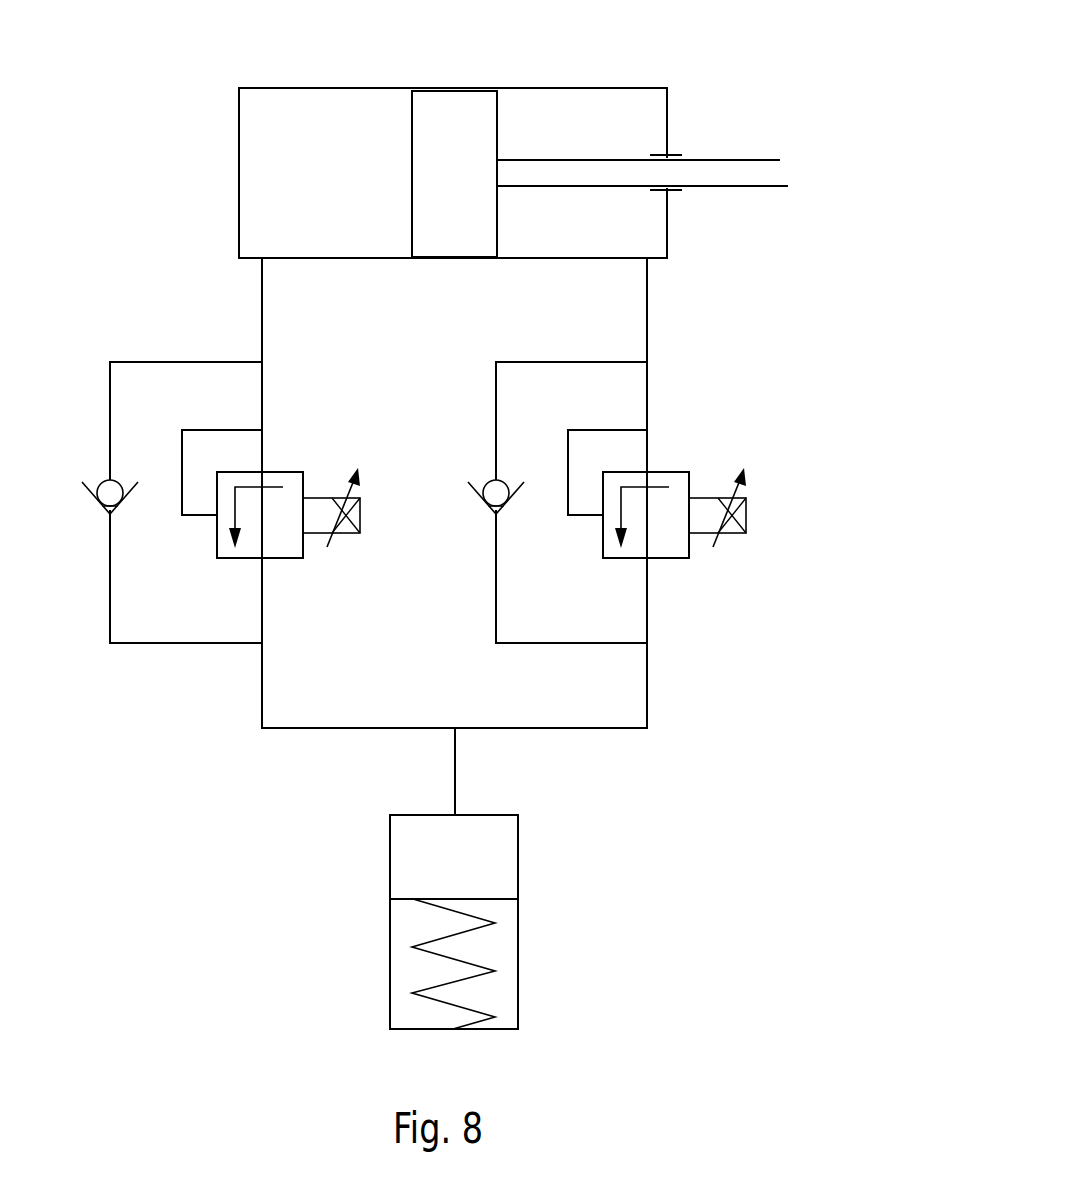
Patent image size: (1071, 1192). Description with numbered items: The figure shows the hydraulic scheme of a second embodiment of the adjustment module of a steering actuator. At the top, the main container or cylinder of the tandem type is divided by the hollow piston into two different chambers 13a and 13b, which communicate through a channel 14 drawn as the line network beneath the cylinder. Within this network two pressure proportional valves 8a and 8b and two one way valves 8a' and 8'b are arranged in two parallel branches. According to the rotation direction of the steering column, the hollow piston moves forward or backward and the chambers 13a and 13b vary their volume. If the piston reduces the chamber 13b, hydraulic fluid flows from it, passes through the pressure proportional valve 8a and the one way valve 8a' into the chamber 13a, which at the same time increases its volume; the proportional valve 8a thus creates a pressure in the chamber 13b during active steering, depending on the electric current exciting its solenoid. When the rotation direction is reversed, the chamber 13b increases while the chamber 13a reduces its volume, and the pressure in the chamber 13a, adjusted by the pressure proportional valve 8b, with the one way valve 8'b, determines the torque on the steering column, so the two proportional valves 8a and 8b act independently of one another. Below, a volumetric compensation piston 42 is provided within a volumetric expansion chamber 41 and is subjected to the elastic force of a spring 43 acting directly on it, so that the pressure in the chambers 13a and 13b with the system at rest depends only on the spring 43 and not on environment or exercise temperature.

The chamber 13a is at (570, 127).
The chamber 13b is at (302, 154).
The channel 14 is at (333, 728).
The pressure proportional valve 8a is at (254, 569).
The one way valve 8a' is at (153, 471).
The pressure proportional valve 8b is at (653, 537).
The one way valve 8'b is at (596, 471).
The volumetric expansion chamber 41 is at (461, 859).
The volumetric compensation piston 42 is at (471, 899).
The spring 43 is at (453, 960).